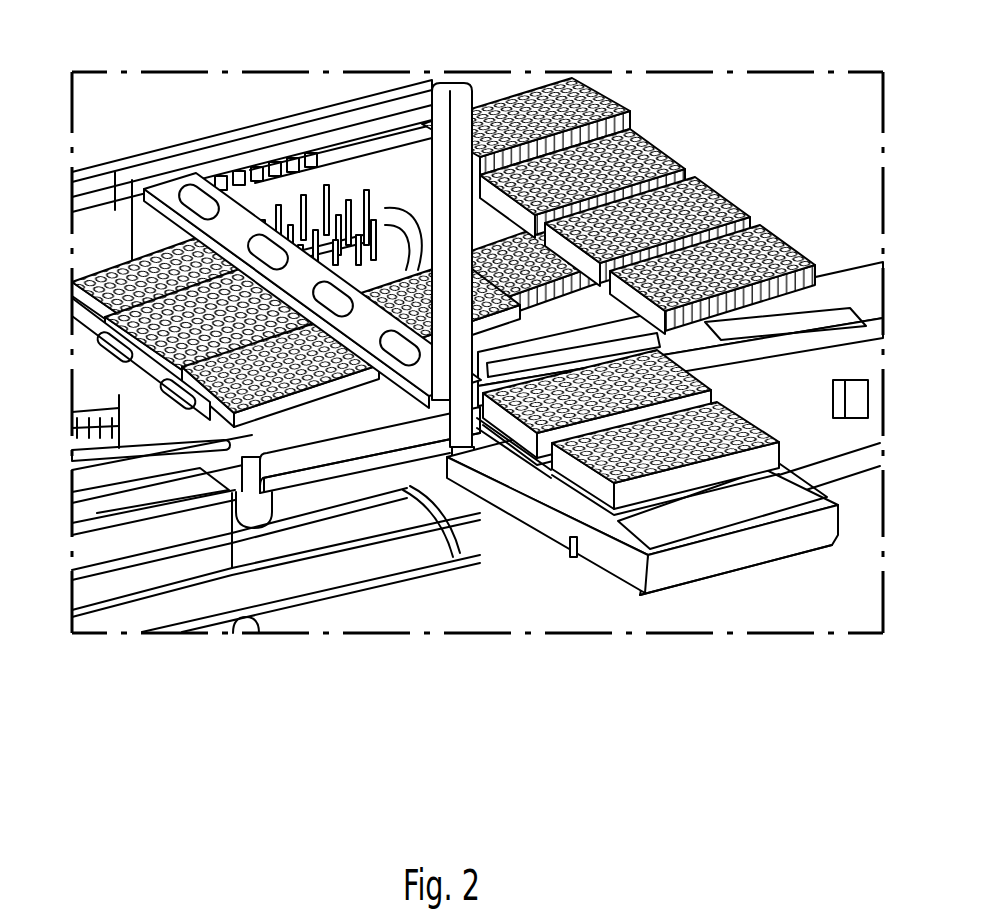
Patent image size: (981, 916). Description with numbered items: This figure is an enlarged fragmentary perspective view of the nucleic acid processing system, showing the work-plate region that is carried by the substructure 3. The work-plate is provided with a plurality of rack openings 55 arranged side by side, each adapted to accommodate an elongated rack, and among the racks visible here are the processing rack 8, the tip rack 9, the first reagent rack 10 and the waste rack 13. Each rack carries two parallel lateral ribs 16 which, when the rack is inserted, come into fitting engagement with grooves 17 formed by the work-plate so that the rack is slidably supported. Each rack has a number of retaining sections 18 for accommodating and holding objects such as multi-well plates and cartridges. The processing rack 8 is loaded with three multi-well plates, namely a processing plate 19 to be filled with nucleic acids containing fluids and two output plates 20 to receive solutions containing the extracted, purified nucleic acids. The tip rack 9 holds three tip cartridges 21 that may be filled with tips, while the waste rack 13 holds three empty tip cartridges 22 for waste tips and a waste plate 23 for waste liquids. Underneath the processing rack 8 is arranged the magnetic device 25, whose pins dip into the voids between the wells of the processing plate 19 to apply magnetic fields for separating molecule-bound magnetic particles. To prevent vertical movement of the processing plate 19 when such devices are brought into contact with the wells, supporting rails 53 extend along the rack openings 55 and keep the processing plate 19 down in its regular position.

The substructure 3 is at (862, 395).
The processing rack 8 is at (640, 580).
The tip rack 9 is at (300, 500).
The first reagent rack 10 is at (150, 530).
The waste rack 13 is at (846, 352).
The lateral ribs 16 is at (840, 505).
The grooves 17 is at (376, 180).
The retaining sections 18 is at (505, 437).
The processing plate 19 is at (512, 250).
The output plates 20 is at (528, 443).
The tip cartridges 21 is at (130, 352).
The empty tip cartridges 22 is at (653, 150).
The waste plate 23 is at (565, 80).
The magnetic device 25 is at (316, 200).
The supporting rails 53 is at (180, 170).
The rack openings 55 is at (90, 210).